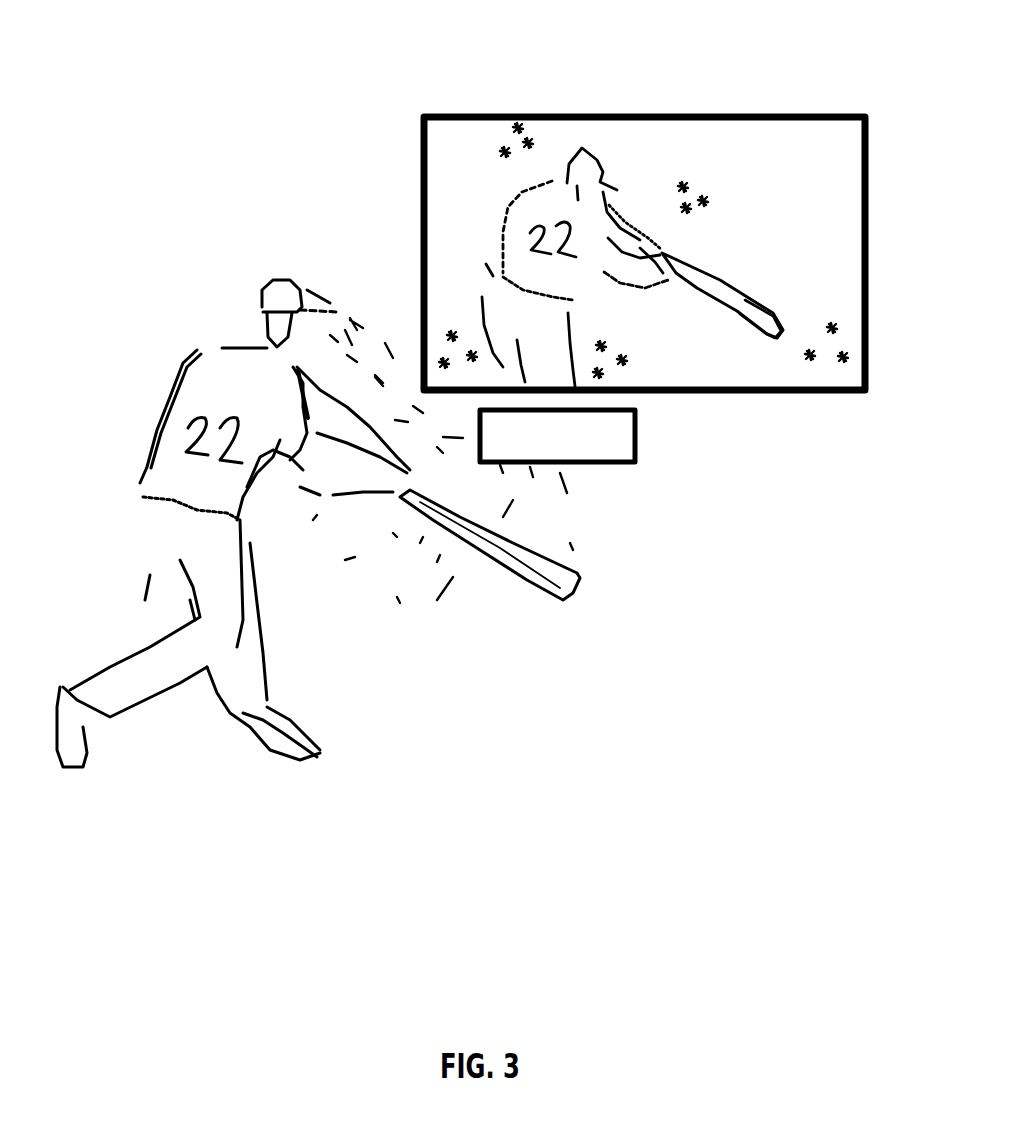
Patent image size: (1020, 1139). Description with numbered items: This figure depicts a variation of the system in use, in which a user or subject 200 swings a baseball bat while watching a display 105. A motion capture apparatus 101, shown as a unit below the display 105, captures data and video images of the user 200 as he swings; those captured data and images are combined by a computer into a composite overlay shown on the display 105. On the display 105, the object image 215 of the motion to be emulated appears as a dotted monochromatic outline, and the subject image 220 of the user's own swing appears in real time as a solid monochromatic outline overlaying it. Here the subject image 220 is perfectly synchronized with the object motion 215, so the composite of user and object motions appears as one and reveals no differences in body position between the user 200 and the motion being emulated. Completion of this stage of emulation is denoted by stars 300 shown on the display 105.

The display 105 is at (423, 162).
The stars 300 is at (695, 200).
The object image 215 is at (738, 277).
The subject image 220 is at (760, 302).
The user or subject 200 is at (218, 360).
The motion capture apparatus 101 is at (637, 440).